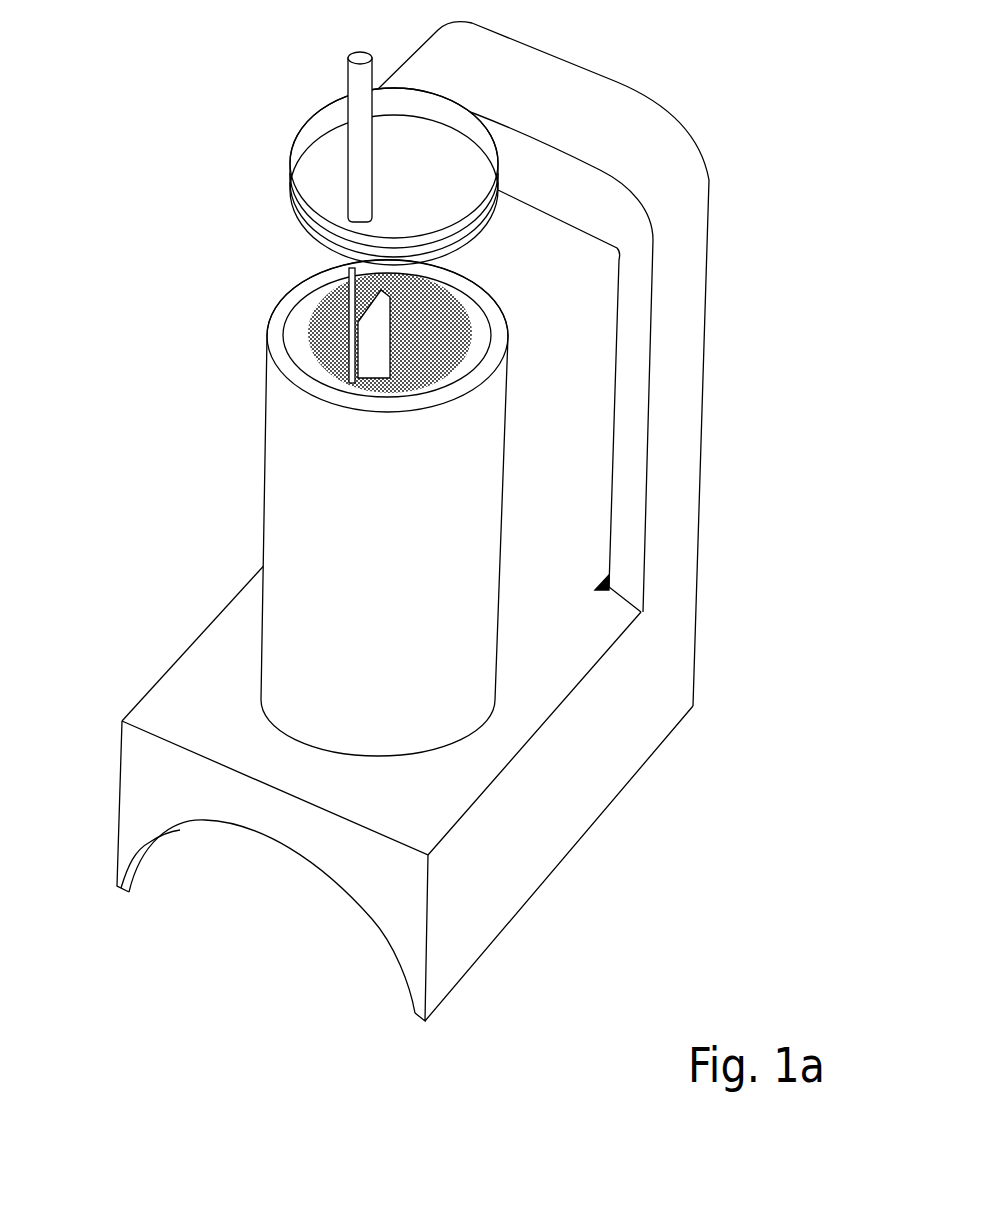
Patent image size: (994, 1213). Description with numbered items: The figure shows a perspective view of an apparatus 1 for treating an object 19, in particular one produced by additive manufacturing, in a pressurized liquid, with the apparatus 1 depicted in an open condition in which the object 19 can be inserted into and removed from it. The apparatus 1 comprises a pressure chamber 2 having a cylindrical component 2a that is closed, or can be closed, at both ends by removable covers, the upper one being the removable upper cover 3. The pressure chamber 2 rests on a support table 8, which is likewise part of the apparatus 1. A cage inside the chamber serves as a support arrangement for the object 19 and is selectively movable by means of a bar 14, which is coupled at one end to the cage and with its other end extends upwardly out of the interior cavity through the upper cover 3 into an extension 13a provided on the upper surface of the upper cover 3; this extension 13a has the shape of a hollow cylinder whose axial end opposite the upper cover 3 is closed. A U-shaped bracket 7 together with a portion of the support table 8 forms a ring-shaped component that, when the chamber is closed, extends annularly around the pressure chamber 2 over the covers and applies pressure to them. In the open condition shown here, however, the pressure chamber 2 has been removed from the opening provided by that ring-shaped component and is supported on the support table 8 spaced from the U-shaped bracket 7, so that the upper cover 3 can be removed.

The apparatus 1 is at (158, 170).
The pressure chamber 2 is at (235, 518).
The cylindrical component 2a is at (282, 458).
The upper cover 3 is at (300, 162).
The U-shaped bracket 7 is at (612, 97).
The support table 8 is at (606, 768).
The extension 13a is at (357, 82).
The bar 14 is at (312, 285).
The object 19 is at (376, 345).